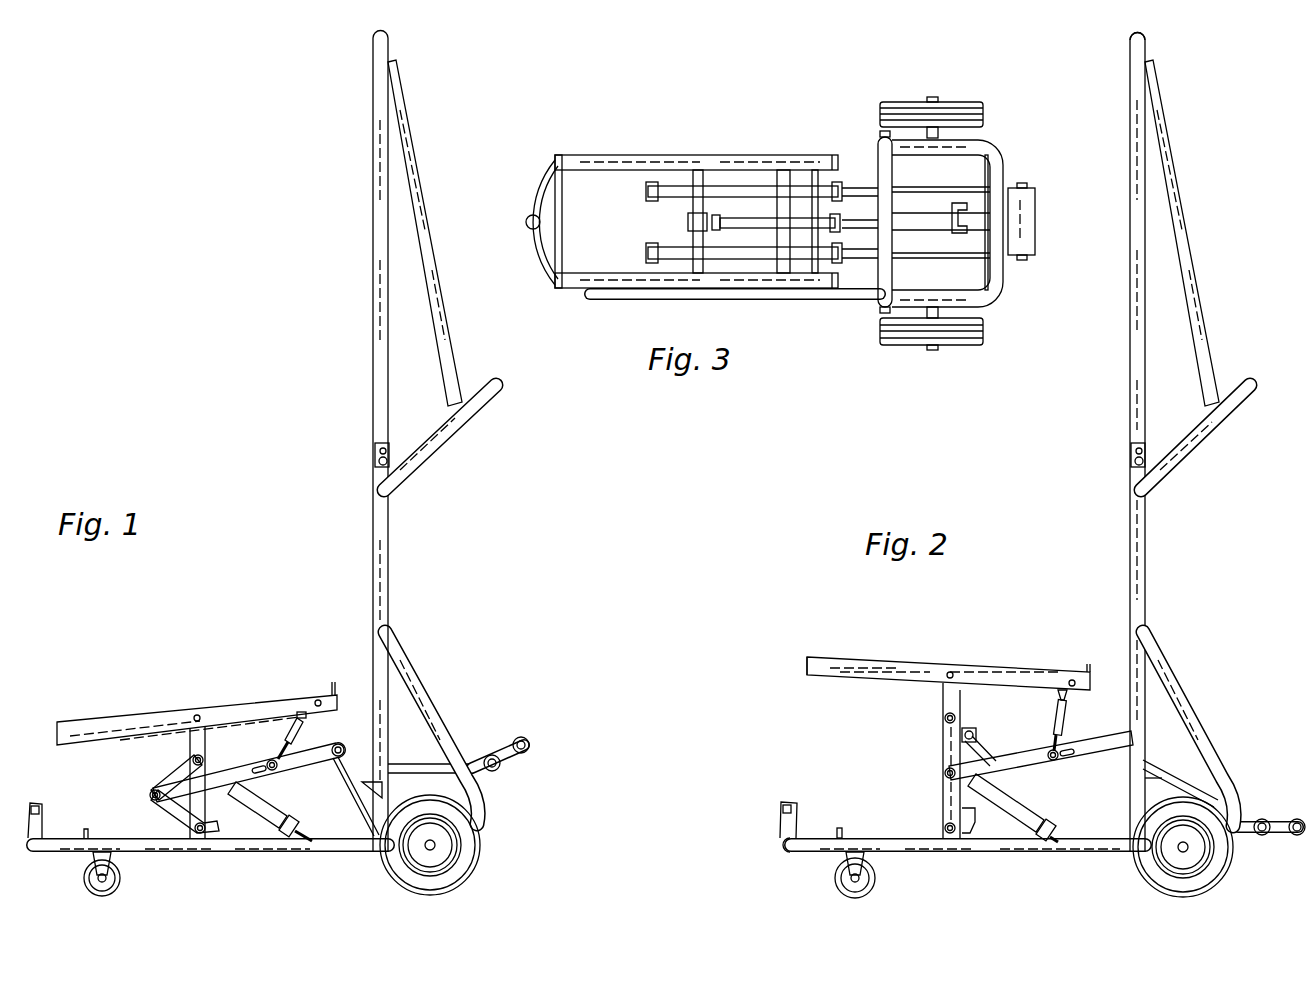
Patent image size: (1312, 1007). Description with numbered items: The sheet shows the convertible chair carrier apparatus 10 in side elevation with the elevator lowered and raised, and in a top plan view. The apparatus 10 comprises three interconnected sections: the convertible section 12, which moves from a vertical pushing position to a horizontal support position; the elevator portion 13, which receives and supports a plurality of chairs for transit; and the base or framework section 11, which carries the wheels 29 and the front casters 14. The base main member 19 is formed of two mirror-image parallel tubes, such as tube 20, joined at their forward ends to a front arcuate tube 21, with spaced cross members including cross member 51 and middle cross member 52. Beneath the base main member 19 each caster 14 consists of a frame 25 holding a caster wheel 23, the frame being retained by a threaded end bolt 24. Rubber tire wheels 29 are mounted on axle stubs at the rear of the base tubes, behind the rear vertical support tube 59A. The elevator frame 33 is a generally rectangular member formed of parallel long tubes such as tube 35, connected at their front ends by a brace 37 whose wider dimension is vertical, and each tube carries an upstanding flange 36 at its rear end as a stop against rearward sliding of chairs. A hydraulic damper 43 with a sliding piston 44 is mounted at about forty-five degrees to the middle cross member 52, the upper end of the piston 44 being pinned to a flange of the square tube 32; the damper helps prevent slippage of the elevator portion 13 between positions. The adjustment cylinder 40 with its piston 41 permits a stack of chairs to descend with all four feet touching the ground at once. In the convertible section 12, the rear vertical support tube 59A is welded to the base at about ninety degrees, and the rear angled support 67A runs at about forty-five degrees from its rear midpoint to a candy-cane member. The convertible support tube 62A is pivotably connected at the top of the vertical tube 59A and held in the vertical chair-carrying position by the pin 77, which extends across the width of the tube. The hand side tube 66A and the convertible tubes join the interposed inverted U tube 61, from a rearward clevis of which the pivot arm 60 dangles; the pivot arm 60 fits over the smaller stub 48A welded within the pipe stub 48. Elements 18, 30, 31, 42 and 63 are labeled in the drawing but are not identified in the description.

In FIG. 1, the portable hoist / cart 10 is at (228, 365).
In FIG. 2, the portable hoist / cart 10 is at (1022, 490).
In FIG. 3, the portable hoist / cart 10 is at (660, 118).
In FIG. 1, the base section 11 is at (245, 846).
In FIG. 1, the convertible section 12 is at (416, 124).
In FIG. 2, the convertible section 12 is at (1190, 162).
In FIG. 3, the convertible section 12 is at (911, 259).
In FIG. 1, the elevator portion 13 is at (158, 706).
In FIG. 1, the front casters 14 is at (133, 871).
In FIG. 2, the hitch bracket 18 is at (770, 842).
In FIG. 2, the base main member 19 is at (1049, 864).
In FIG. 2, the base tube 20 is at (968, 848).
In FIG. 2, the front arcuate tube 21 is at (791, 849).
In FIG. 2, the caster wheel 23 is at (873, 884).
In FIG. 2, the threaded end bolt 24 is at (840, 828).
In FIG. 2, the caster frame 25 is at (838, 861).
In FIG. 1, the wheels 29 is at (479, 845).
In FIG. 2, the wheels 29 is at (1231, 857).
In FIG. 3, the wheels 29 is at (958, 100).
In FIG. 1, the lower link 30 is at (165, 827).
In FIG. 2, the lower link 30 is at (942, 800).
In FIG. 1, the upper link 31 is at (166, 785).
In FIG. 2, the upper link 31 is at (942, 745).
In FIG. 1, the square tube 32 is at (190, 735).
In FIG. 2, the square tube 32 is at (942, 700).
In FIG. 2, the elevator frame 33 is at (972, 640).
In FIG. 2, the long tube 35 is at (882, 664).
In FIG. 2, the upstanding flange 36 is at (1077, 666).
In FIG. 2, the brace 37 is at (812, 660).
In FIG. 2, the adjustment cylinder 40 is at (1058, 722).
In FIG. 2, the piston 41 is at (1067, 696).
In FIG. 1, the lift arm 42 is at (290, 768).
In FIG. 2, the lift arm 42 is at (1086, 752).
In FIG. 1, the hydraulic damper 43 is at (289, 810).
In FIG. 2, the hydraulic damper 43 is at (1041, 806).
In FIG. 2, the sliding piston 44 is at (978, 738).
In FIG. 1, the pipe stub 48 is at (45, 822).
In FIG. 2, the smaller stub 48A is at (1232, 805).
In FIG. 3, the cross member 51 is at (700, 275).
In FIG. 3, the middle cross member 52 is at (789, 272).
In FIG. 2, the rear vertical support tube 59A is at (1147, 554).
In FIG. 1, the pivot arm 60 is at (413, 172).
In FIG. 2, the pivot arm 60 is at (1178, 236).
In FIG. 2, the inverted U tube 61 is at (1134, 34).
In FIG. 2, the convertible support tube 62A is at (1137, 192).
In FIG. 2, the handle 63 is at (1249, 379).
In FIG. 2, the hand side tube 66A is at (1172, 456).
In FIG. 2, the rear angled support 67A is at (1177, 703).
In FIG. 1, the pin 77 is at (376, 456).